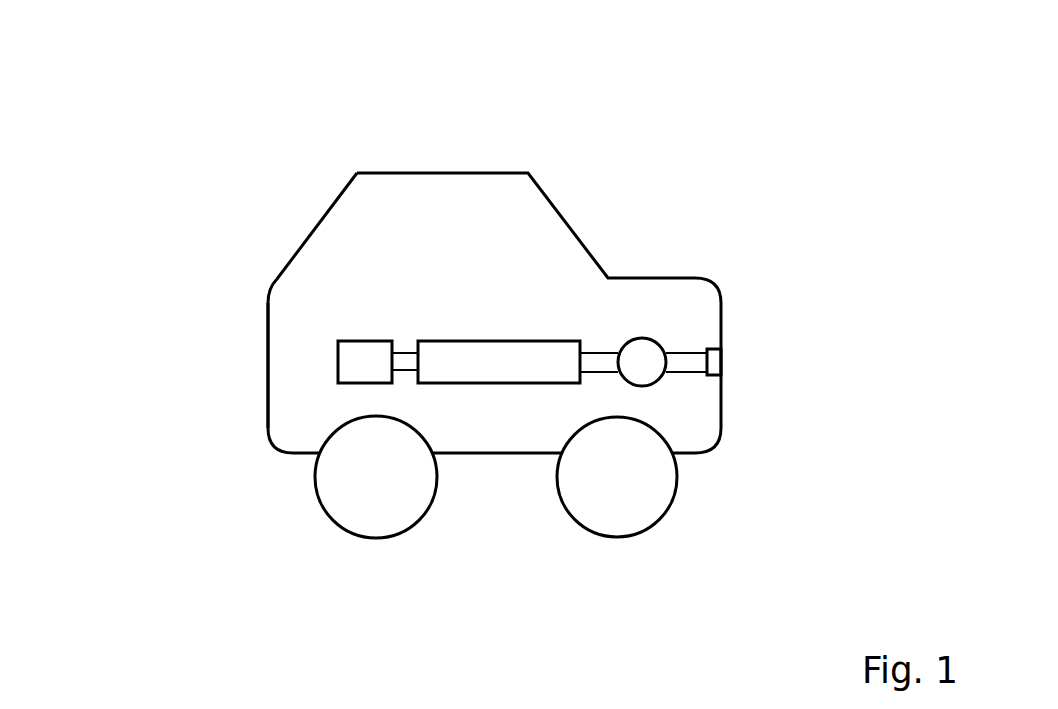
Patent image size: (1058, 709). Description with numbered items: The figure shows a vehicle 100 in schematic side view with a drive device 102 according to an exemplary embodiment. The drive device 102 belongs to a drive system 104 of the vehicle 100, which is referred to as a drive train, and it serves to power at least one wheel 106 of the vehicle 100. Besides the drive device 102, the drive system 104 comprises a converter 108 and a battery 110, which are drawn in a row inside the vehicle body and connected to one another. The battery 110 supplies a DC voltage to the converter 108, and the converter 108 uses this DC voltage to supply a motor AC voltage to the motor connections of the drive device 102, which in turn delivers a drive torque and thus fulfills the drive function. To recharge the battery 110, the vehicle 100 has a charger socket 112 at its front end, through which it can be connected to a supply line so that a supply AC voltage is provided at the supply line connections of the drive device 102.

The vehicle 100 is at (606, 164).
The drive device 102 is at (660, 380).
The drive system 104 is at (448, 294).
The wheel 106 is at (647, 529).
The converter 108 is at (499, 385).
The battery 110 is at (338, 358).
The charger socket 112 is at (721, 343).